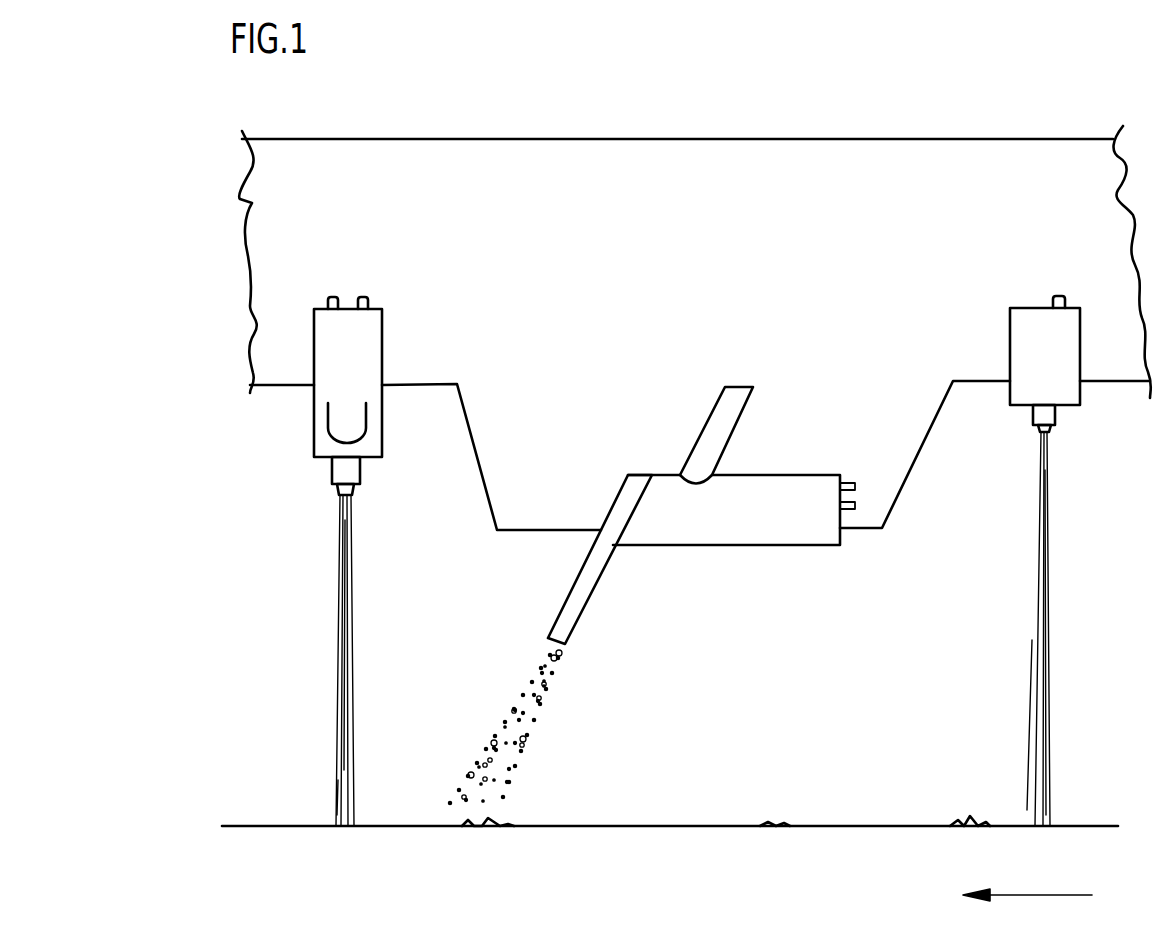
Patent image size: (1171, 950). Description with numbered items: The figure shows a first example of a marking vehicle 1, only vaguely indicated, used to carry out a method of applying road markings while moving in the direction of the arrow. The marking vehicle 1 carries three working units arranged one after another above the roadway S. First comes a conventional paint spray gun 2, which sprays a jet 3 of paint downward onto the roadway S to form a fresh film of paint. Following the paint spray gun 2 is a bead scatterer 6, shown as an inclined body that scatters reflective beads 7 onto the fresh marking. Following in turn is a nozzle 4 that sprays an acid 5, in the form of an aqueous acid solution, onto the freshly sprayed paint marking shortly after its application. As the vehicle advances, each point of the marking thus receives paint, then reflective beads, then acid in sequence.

The marking vehicle 1 is at (670, 165).
The paint spray gun 2 is at (330, 392).
The jet of paint 3 is at (350, 633).
The nozzle 4 is at (1020, 353).
The acid 5 is at (1037, 622).
The bead scatterer 6 is at (723, 525).
The reflective beads 7 is at (521, 728).
The roadway S is at (430, 827).